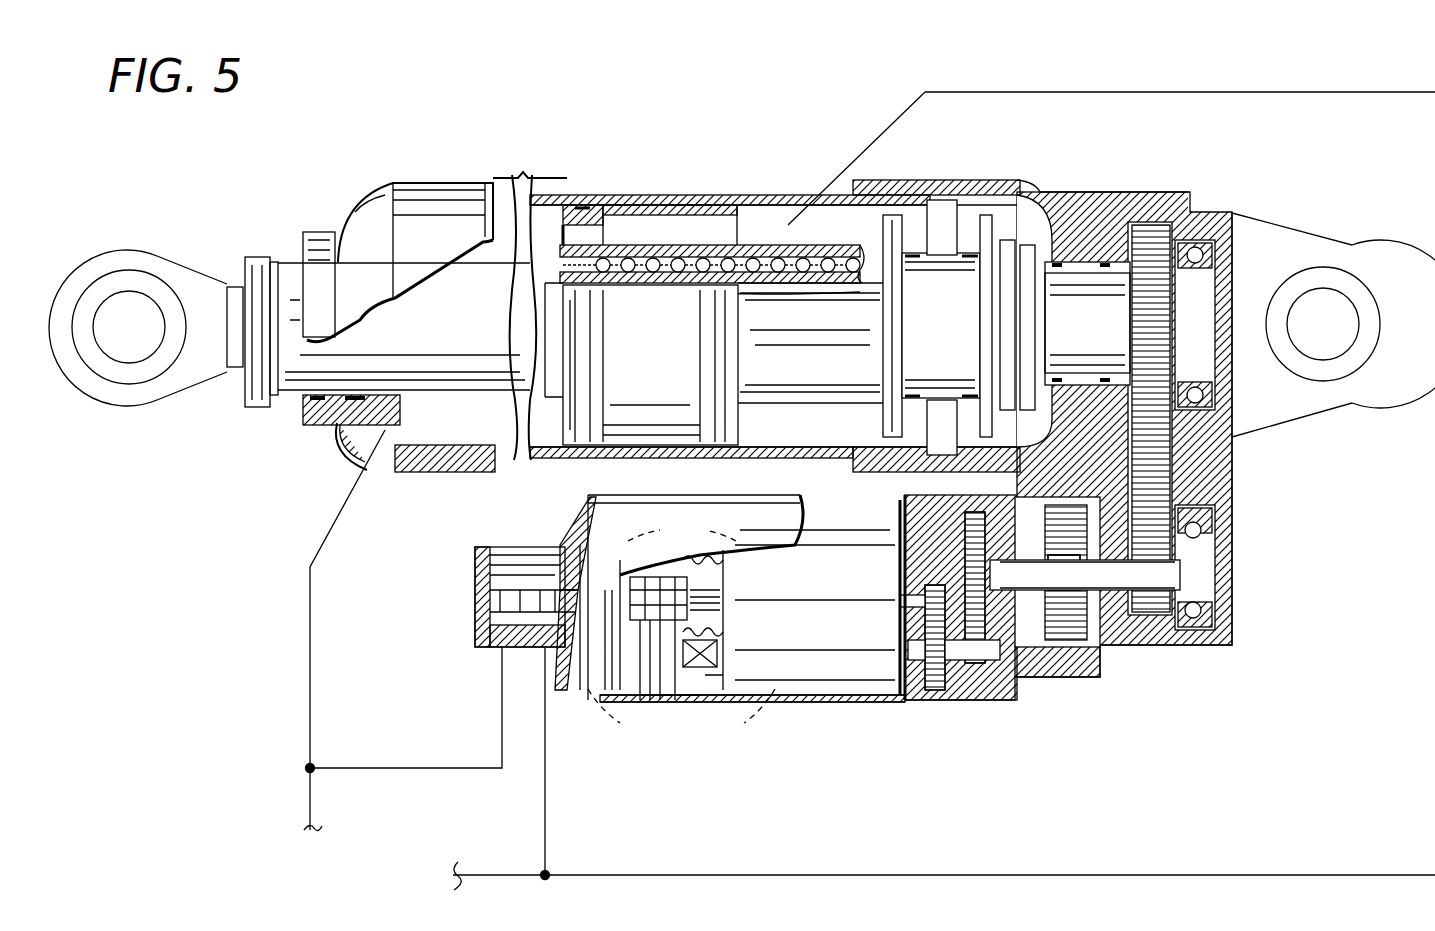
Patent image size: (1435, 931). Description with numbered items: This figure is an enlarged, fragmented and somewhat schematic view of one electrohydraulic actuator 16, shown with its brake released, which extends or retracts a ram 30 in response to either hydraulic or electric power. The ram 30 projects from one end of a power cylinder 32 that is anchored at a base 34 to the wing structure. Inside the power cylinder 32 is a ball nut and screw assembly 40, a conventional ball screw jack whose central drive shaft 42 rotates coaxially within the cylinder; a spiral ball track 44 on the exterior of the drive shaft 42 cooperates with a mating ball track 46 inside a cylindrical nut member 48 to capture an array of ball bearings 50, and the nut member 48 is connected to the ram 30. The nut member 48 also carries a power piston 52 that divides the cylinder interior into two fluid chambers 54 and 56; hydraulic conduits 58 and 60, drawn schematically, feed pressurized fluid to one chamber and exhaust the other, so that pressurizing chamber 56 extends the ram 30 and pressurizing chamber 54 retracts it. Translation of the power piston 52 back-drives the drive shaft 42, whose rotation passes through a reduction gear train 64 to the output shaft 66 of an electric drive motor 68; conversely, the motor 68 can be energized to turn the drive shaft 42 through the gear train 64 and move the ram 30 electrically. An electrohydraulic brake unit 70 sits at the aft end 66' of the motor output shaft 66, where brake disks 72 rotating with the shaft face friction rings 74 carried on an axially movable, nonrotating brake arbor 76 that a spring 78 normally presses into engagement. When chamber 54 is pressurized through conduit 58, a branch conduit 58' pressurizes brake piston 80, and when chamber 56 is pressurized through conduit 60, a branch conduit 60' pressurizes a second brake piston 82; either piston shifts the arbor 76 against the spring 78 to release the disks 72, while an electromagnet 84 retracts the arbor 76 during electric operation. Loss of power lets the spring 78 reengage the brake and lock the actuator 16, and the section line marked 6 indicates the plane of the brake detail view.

The electrohydraulic actuator 16 is at (1132, 702).
The ram 30 is at (238, 290).
The power cylinder 32 is at (725, 200).
The base 34 is at (1285, 247).
The ball nut and screw assembly 40 is at (842, 238).
The central drive shaft 42 is at (1085, 300).
The spiral ball track 44 is at (592, 270).
The mating ball track 46 is at (750, 245).
The cylindrical nut member 48 is at (640, 250).
The ball bearings 50 is at (792, 272).
The power piston 52 is at (600, 215).
The fluid chamber 54 is at (437, 414).
The fluid chamber 56 is at (810, 408).
The hydraulic conduit 58 is at (293, 630).
The branch conduit 58' is at (404, 710).
The hydraulic conduit 60 is at (944, 471).
The branch conduit 60' is at (513, 763).
The reduction gear train 64 is at (1195, 440).
The motor output shaft 66 is at (929, 601).
The aft end of motor output shaft 66' is at (764, 602).
The electric drive motor 68 is at (850, 680).
The electrohydraulic brake unit 70 is at (590, 582).
The brake disks 72 is at (660, 575).
The friction rings 74 is at (665, 658).
The brake arbor 76 is at (607, 700).
The spring 78 is at (740, 572).
The brake piston 80 is at (510, 605).
The brake piston 82 is at (565, 592).
The electromagnet 84 is at (745, 640).
The section line 6- 6 is at (770, 730).